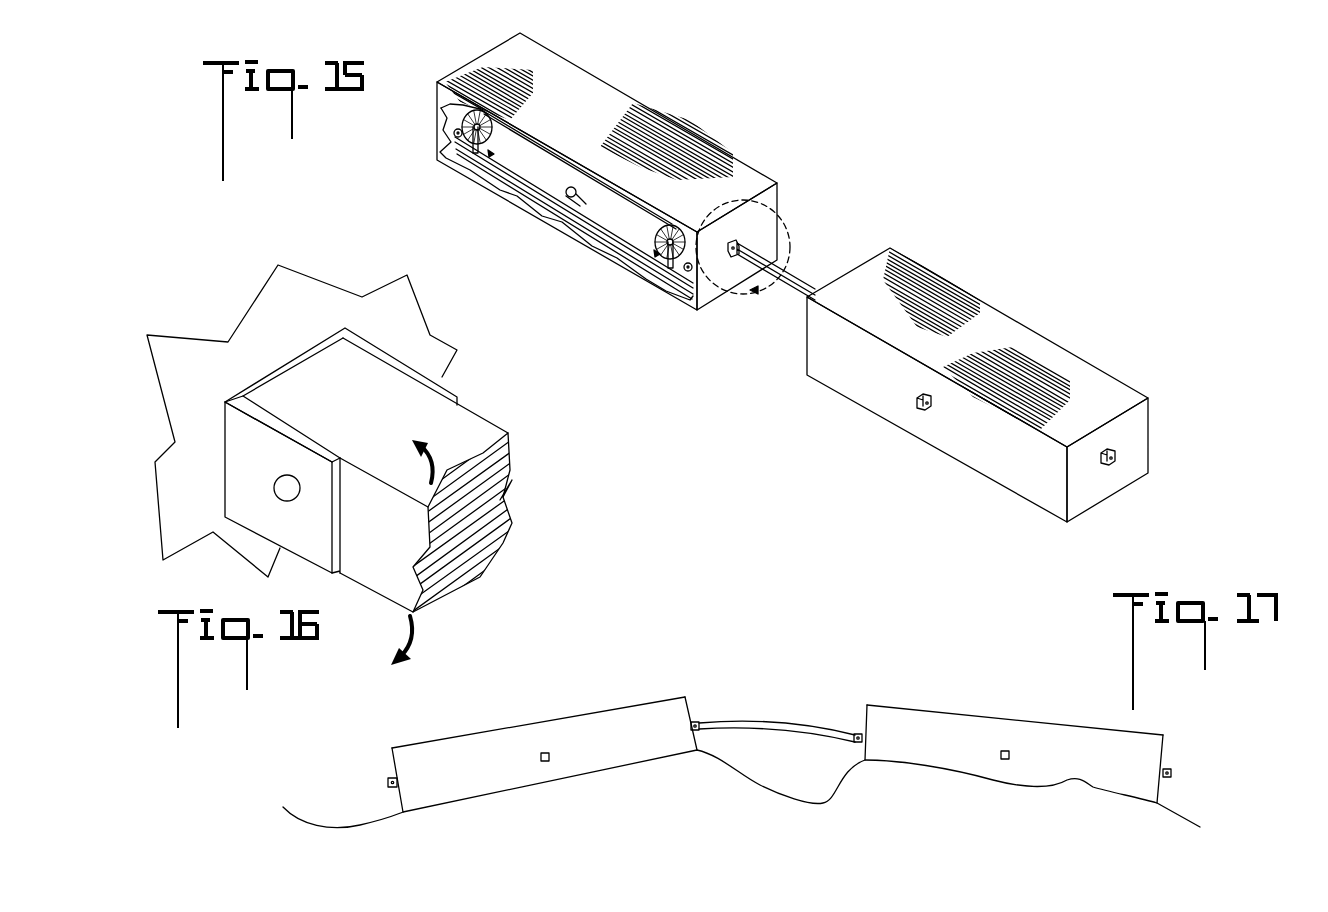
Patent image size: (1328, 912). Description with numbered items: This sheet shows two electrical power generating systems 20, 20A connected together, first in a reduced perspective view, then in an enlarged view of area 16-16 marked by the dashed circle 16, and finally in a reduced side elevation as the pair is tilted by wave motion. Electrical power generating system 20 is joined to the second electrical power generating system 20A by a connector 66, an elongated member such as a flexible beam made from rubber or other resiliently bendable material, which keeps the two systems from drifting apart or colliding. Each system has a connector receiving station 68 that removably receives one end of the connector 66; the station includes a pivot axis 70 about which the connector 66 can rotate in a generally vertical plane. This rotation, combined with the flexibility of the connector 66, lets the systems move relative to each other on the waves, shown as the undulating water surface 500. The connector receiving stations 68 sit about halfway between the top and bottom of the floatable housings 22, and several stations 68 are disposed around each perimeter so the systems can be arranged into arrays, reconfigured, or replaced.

In FIG. 15, the electrical power generating system 20 is at (655, 83).
In FIG. 17, the electrical power generating system 20 is at (540, 703).
In FIG. 15, the second electrical power generating system 20A is at (1010, 297).
In FIG. 17, the second electrical power generating system 20A is at (988, 702).
In FIG. 15, the floatable housing 22 is at (588, 83).
In FIG. 16, the floatable housing 22 is at (267, 342).
In FIG. 17, the floatable housing 22 is at (458, 738).
In FIG. 15, the connector 66 is at (797, 272).
In FIG. 16, the connector 66 is at (427, 420).
In FIG. 17, the connector 66 is at (785, 727).
In FIG. 15, the connector receiving station 68 is at (737, 243).
In FIG. 16, the connector receiving station 68 is at (403, 365).
In FIG. 17, the connector receiving station 68 is at (388, 782).
In FIG. 16, the pivot axis 70 is at (287, 490).
In FIG. 15, the area 16- 16 is at (744, 284).
In FIG. 17, the ground surface 500 is at (308, 820).